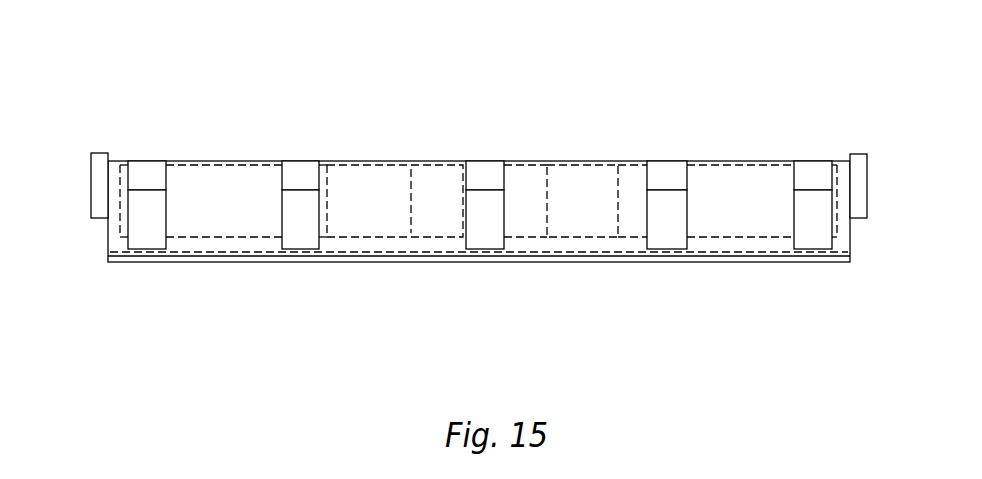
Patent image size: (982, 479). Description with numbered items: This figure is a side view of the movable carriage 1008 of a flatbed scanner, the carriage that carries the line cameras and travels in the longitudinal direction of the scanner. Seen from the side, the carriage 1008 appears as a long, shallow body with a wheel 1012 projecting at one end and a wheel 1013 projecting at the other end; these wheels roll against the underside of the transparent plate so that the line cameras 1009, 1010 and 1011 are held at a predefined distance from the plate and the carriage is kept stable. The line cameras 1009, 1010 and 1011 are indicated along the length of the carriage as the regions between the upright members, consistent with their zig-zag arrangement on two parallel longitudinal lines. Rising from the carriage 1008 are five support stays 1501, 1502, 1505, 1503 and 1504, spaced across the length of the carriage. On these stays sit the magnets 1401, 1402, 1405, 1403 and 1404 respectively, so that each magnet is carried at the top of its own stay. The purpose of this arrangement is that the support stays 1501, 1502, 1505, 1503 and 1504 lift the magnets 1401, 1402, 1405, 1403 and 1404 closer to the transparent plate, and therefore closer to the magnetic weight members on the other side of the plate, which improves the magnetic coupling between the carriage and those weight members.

The movable carriage 1008 is at (354, 262).
The line camera 1009 is at (230, 167).
The line camera 1010 is at (443, 167).
The line camera 1011 is at (730, 167).
The wheel 1012 is at (107, 153).
The wheel 1013 is at (865, 154).
The magnet 1401 is at (155, 161).
The magnet 1402 is at (302, 161).
The magnet 1403 is at (665, 161).
The magnet 1404 is at (808, 161).
The magnet 1405 is at (493, 161).
The support stay 1501 is at (166, 220).
The support stay 1502 is at (320, 218).
The support stay 1503 is at (687, 213).
The support stay 1504 is at (833, 217).
The support stay 1505 is at (504, 215).